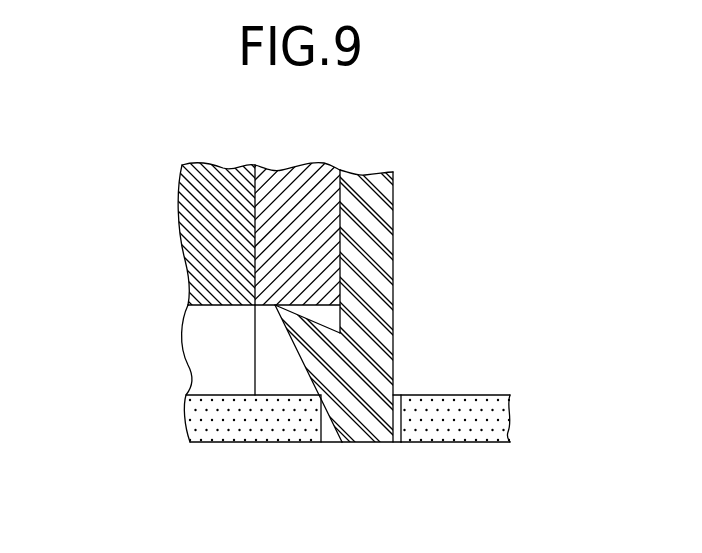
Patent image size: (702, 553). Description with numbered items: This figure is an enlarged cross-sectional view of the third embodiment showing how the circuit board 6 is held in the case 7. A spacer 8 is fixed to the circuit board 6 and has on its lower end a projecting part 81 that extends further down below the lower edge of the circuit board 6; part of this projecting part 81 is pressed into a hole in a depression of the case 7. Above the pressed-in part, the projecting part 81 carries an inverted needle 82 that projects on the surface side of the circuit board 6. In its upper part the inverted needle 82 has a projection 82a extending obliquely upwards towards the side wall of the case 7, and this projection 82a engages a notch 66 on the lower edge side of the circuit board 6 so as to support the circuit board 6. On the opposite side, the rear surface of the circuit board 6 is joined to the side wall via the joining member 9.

The circuit board 6 is at (293, 200).
The case 7 is at (460, 405).
The spacer 8 is at (385, 178).
The joining member 9 is at (192, 218).
The notch 66 is at (278, 382).
The projecting part 81 is at (375, 433).
The inverted needle 82 is at (332, 368).
The projection 82a is at (284, 323).